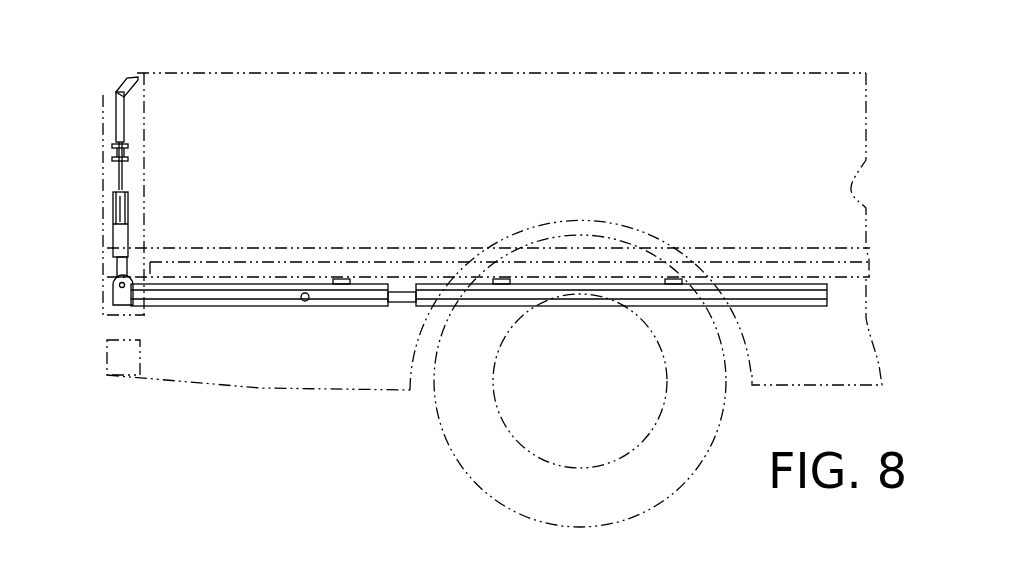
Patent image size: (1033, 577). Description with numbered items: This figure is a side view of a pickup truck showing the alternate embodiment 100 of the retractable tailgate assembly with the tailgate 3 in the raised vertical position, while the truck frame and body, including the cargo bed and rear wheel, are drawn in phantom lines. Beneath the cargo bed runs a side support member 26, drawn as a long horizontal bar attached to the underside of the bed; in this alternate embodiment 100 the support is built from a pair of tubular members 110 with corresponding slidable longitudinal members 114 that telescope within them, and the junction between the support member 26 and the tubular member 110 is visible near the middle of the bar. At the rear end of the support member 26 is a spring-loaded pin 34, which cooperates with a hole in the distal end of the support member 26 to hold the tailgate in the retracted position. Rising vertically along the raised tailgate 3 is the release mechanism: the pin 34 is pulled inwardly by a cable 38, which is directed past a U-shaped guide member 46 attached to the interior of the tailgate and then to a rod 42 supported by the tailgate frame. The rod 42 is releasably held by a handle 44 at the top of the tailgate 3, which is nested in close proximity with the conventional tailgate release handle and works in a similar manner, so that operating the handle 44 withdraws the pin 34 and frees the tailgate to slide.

The tailgate 3 is at (107, 90).
The alternate embodiment 100 is at (131, 182).
The handle 44 is at (129, 80).
The rods 42 is at (123, 130).
The cable 38 is at (127, 187).
The U-shaped guide member 46 is at (114, 240).
The spring-loaded pins 34 is at (116, 295).
The side support members 26 is at (200, 290).
The slidable longitudinal members 114 is at (403, 290).
The tubular members 110 is at (458, 290).